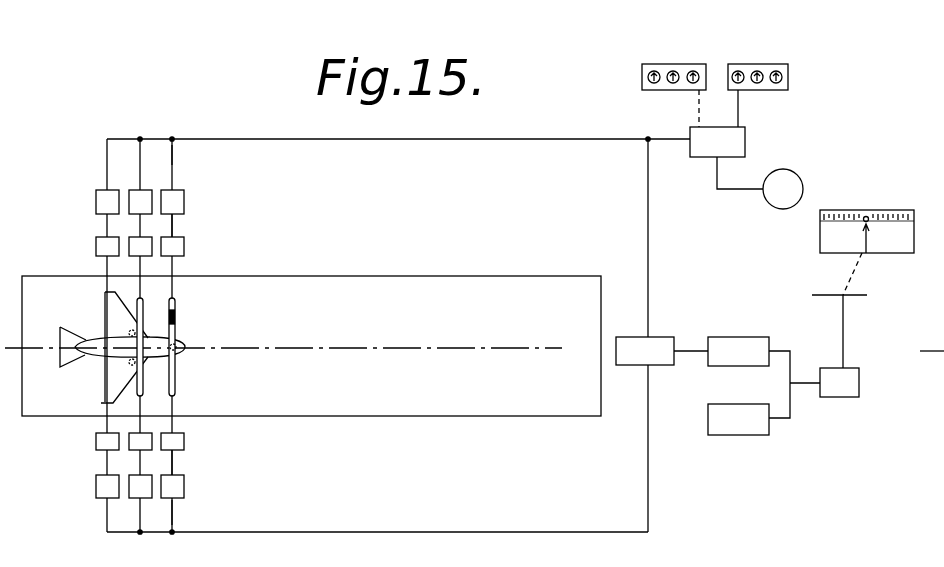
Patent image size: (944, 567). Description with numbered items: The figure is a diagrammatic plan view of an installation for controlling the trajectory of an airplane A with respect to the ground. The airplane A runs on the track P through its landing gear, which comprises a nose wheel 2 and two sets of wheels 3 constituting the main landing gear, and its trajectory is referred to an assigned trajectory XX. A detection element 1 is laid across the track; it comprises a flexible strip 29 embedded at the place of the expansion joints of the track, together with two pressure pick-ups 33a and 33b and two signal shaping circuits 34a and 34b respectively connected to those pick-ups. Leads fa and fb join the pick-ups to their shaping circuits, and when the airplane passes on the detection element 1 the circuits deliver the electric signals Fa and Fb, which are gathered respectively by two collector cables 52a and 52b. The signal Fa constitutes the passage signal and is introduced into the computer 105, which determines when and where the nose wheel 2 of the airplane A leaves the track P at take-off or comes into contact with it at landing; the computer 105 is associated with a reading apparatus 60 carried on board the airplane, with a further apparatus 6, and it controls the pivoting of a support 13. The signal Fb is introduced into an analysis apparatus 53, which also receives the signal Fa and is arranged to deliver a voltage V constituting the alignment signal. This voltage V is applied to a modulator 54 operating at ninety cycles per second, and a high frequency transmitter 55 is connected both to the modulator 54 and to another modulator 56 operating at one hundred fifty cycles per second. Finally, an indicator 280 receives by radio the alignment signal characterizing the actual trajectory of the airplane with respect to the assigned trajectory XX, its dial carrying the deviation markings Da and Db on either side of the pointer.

The collector cable 52a is at (478, 139).
The collector cable 52b is at (440, 532).
The signal shaping circuit 34a is at (178, 198).
The pressure pick-up 33a is at (180, 246).
The electric signal Fa is at (175, 152).
The upper intermediate lead fa is at (175, 224).
The pressure pick-up 33b is at (180, 440).
The signal shaping circuit 34b is at (180, 485).
The lower intermediate lead fb is at (175, 460).
The electric signal Fb is at (175, 512).
The track P is at (543, 290).
The assigned trajectory XX is at (300, 348).
The airplane A is at (96, 354).
The detection element 1 is at (169, 299).
The flexible strip 29 is at (176, 312).
The nose wheel 2 is at (178, 342).
The sets of wheels 3 is at (128, 337).
The analysis apparatus 53 is at (645, 351).
The voltage V is at (689, 351).
The modulator 54 is at (735, 344).
The modulator 56 is at (733, 425).
The high frequency transmitter 55 is at (845, 390).
The reading apparatus 60 is at (665, 62).
The second indicator group 6 is at (751, 62).
The computer 105 is at (717, 142).
The support 13 is at (790, 178).
The indicator 280 is at (866, 208).
The left deviation scale Da is at (838, 236).
The right deviation scale Db is at (895, 236).